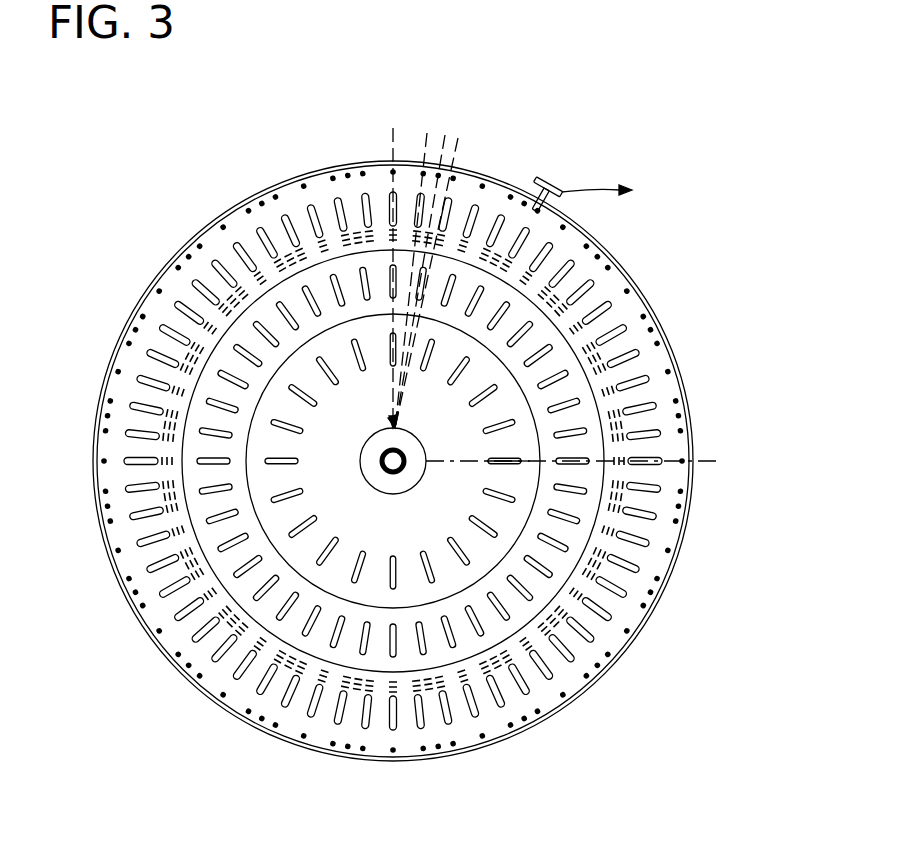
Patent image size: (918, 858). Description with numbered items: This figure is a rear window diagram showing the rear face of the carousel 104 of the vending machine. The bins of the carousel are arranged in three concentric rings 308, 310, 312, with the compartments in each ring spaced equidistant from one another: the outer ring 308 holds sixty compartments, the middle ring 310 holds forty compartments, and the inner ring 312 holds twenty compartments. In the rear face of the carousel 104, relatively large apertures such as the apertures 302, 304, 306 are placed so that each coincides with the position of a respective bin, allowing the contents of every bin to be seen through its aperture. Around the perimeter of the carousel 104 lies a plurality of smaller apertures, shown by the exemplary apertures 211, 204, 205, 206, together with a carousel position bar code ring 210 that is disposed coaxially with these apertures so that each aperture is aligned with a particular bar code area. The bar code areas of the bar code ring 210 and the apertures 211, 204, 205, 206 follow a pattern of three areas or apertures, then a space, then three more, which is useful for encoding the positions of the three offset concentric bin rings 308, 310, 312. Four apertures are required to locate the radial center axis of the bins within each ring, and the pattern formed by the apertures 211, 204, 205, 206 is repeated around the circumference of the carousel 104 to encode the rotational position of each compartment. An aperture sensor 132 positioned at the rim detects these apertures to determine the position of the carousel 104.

The carousel 104 is at (348, 89).
The aperture sensor 132 is at (556, 186).
The aperture 204 is at (425, 160).
The aperture 205 is at (447, 150).
The aperture 206 is at (473, 172).
The carousel position bar code ring 210 is at (463, 460).
The aperture 211 is at (402, 157).
The aperture 302 is at (660, 460).
The aperture 304 is at (483, 461).
The aperture 306 is at (522, 460).
The concentric ring 308 is at (431, 461).
The concentric ring 310 is at (481, 461).
The concentric ring 312 is at (530, 463).